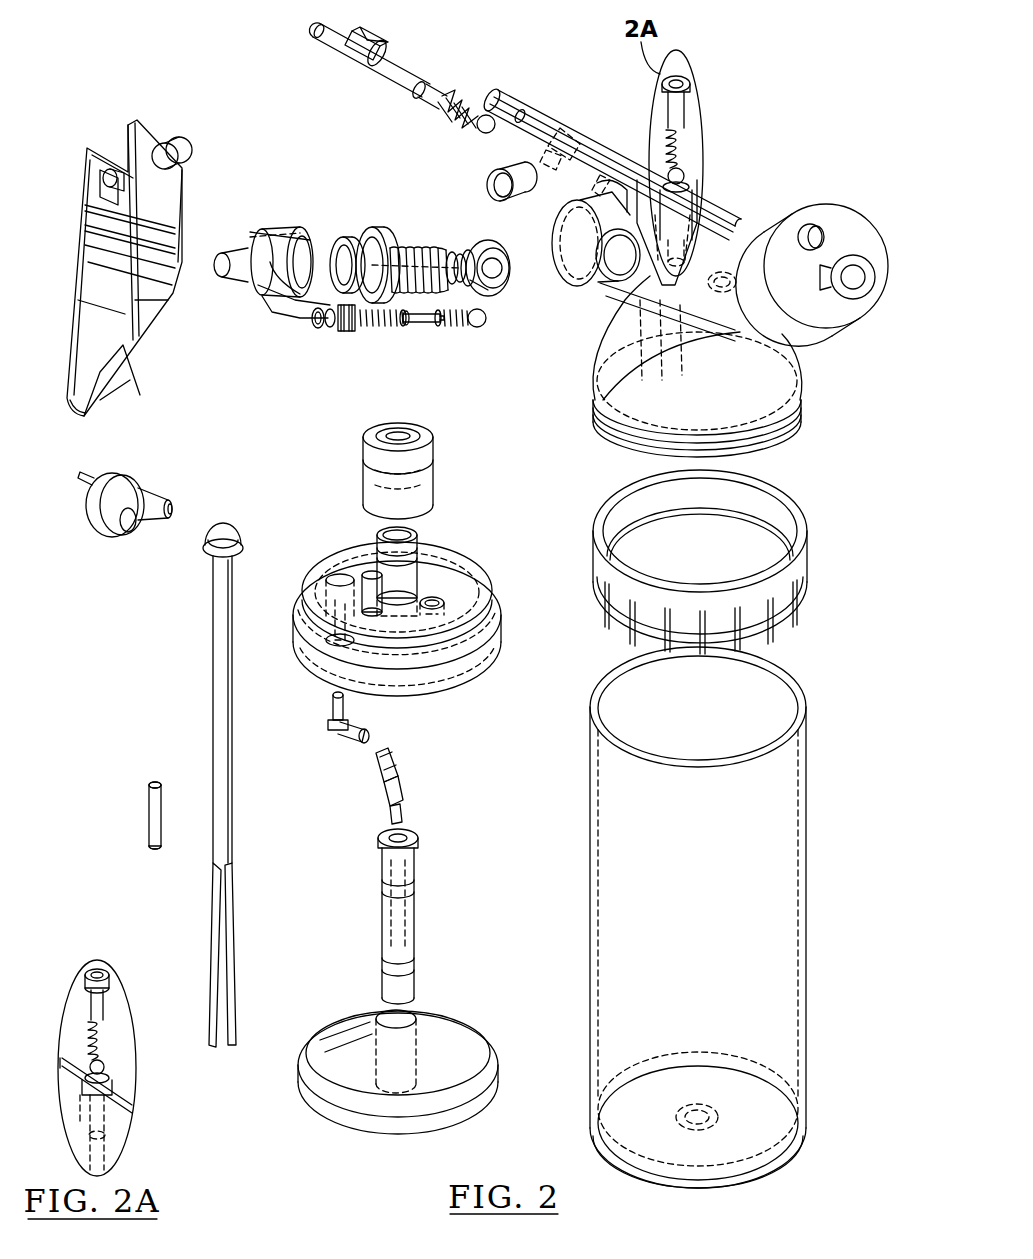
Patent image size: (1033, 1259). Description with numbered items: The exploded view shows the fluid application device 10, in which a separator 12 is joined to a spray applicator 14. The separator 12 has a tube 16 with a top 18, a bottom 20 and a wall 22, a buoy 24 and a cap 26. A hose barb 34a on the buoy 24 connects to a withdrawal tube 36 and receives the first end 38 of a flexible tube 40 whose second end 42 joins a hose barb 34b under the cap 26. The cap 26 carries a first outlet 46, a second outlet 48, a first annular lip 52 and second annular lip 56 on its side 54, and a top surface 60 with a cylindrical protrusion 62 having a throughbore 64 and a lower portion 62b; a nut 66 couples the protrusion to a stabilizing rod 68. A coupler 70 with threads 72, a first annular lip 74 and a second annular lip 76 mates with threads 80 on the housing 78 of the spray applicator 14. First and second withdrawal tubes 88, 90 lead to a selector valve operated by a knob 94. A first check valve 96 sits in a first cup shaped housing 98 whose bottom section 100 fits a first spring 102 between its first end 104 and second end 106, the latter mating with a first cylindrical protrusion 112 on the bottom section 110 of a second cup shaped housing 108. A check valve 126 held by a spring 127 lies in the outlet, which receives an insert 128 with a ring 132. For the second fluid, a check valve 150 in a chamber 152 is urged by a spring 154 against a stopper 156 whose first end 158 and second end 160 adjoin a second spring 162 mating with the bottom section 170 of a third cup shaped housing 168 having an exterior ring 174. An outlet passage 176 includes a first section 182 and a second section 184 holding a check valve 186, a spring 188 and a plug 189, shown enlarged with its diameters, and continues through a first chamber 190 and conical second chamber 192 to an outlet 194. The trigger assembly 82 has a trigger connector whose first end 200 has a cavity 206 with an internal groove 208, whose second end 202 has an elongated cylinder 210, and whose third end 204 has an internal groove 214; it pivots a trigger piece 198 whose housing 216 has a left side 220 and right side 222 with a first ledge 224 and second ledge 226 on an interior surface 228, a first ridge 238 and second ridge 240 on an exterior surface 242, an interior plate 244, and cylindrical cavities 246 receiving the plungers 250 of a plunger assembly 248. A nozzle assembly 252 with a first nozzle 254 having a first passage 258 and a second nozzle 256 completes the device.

In FIG. 2, the fluid application device 10 is at (812, 90).
In FIG. 2, the separator 12 is at (533, 840).
In FIG. 2, the spray applicator 14 is at (776, 176).
In FIG. 2, the tube 16 is at (812, 882).
In FIG. 2, the top 18 is at (806, 698).
In FIG. 2, the bottom 20 is at (788, 1160).
In FIG. 2, the wall 22 is at (808, 803).
In FIG. 2, the buoy 24 is at (312, 1112).
In FIG. 2, the cap 26 is at (488, 530).
In FIG. 2, the hose barb 34a is at (396, 770).
In FIG. 2, the hose barb 34b is at (328, 724).
In FIG. 2, the withdrawal tube 36 is at (418, 922).
In FIG. 2, the first end 38 is at (153, 782).
In FIG. 2, the tube 40 is at (150, 805).
In FIG. 2, the second end 42 is at (156, 848).
In FIG. 2, the first outlet 46 is at (336, 573).
In FIG. 2, the second outlet 48 is at (362, 555).
In FIG. 2, the first annular lip 52 is at (496, 636).
In FIG. 2, the side 54 is at (485, 610).
In FIG. 2, the second annular lip 56 is at (482, 676).
In FIG. 2, the top surface 60 is at (490, 585).
In FIG. 2, the cylindrical protrusion 62 is at (412, 530).
In FIG. 2, the stem lower portion 62b is at (440, 566).
In FIG. 2, the throughbore 64 is at (380, 538).
In FIG. 2, the nut 66 is at (425, 475).
In FIG. 2, the stabilizing rod 68 is at (212, 698).
In FIG. 2, the coupler 70 is at (806, 522).
In FIG. 2, the threads 72 is at (762, 527).
In FIG. 2, the first annular lip 74 is at (770, 496).
In FIG. 2, the second annular lip 76 is at (790, 618).
In FIG. 2, the housing 78 is at (812, 376).
In FIG. 2, the threads 80 is at (800, 428).
In FIG. 2, the first withdrawal tube 88 is at (616, 426).
In FIG. 2, the second withdrawal tube 90 is at (640, 446).
In FIG. 2, the knob 94 is at (607, 292).
In FIG. 2, the first check valve 96 is at (290, 210).
In FIG. 2, the first cup shaped housing 98 is at (472, 250).
In FIG. 2, the bottom section 100 is at (453, 250).
In FIG. 2, the first spring 102 is at (458, 256).
In FIG. 2, the first end 104 is at (488, 292).
In FIG. 2, the second end 106 is at (380, 242).
In FIG. 2, the second cup shaped housing 108 is at (366, 232).
In FIG. 2, the bottom section 110 is at (380, 290).
In FIG. 2, the first cylindrical protrusion 112 is at (386, 245).
In FIG. 2, the check valve 126 is at (477, 129).
In FIG. 2, the spring 127 is at (437, 112).
In FIG. 2, the insert 128 is at (380, 62).
In FIG. 2, the ring 132 is at (328, 38).
In FIG. 2, the check valve 150 is at (487, 323).
In FIG. 2, the chamber 152 is at (722, 268).
In FIG. 2, the spring 154 is at (460, 328).
In FIG. 2, the stopper 156 is at (440, 326).
In FIG. 2, the first end 158 is at (440, 328).
In FIG. 2, the second end 160 is at (410, 326).
In FIG. 2, the second spring 162 is at (400, 328).
In FIG. 2, the third cup shaped housing 168 is at (345, 333).
In FIG. 2, the bottom section 170 is at (330, 328).
In FIG. 2, the exterior ring 174 is at (290, 296).
In FIG. 2, the outlet passage 176 is at (636, 156).
In FIG. 2, the first section 182 is at (700, 212).
In FIG. 2A, the first section 182 is at (104, 1067).
In FIG. 2, the second section 184 is at (700, 180).
In FIG. 2A, the second section 184 is at (130, 1088).
In FIG. 2, the check valve 186 is at (686, 160).
In FIG. 2A, the check valve 186 is at (108, 1060).
In FIG. 2, the spring 188 is at (688, 120).
In FIG. 2, the plug 189 is at (690, 82).
In FIG. 2, the first chamber 190 is at (560, 118).
In FIG. 2, the second chamber 192 is at (510, 96).
In FIG. 2, the outlet 194 is at (486, 100).
In FIG. 2, the trigger piece 198 is at (60, 362).
In FIG. 2, the first end 200 is at (290, 220).
In FIG. 2, the second end 202 is at (245, 258).
In FIG. 2, the third end 204 is at (275, 316).
In FIG. 2, the cavity 206 is at (338, 242).
In FIG. 2, the internal groove 208 is at (258, 240).
In FIG. 2, the elongated cylinder 210 is at (268, 240).
In FIG. 2, the internal groove 214 is at (317, 328).
In FIG. 2, the housing 216 is at (58, 182).
In FIG. 2, the left side 220 is at (70, 412).
In FIG. 2, the right side 222 is at (130, 385).
In FIG. 2, the first ledge 224 is at (110, 255).
In FIG. 2, the second ledge 226 is at (112, 270).
In FIG. 2, the interior surface 228 is at (125, 350).
In FIG. 2, the first ridge 238 is at (137, 118).
In FIG. 2, the second ridge 240 is at (86, 240).
In FIG. 2, the exterior surface 242 is at (92, 320).
In FIG. 2, the interior plate 244 is at (115, 168).
In FIG. 2, the cylindrical cavity 246 is at (87, 148).
In FIG. 2, the plunger assembly 248 is at (486, 156).
In FIG. 2, the plunger 250 is at (498, 196).
In FIG. 2, the nozzle assembly 252 is at (78, 520).
In FIG. 2, the first nozzle 254 is at (130, 472).
In FIG. 2, the second nozzle 256 is at (110, 535).
In FIG. 2, the first passage 258 is at (98, 472).
In FIG. 2, the trigger assembly 82 is at (212, 178).